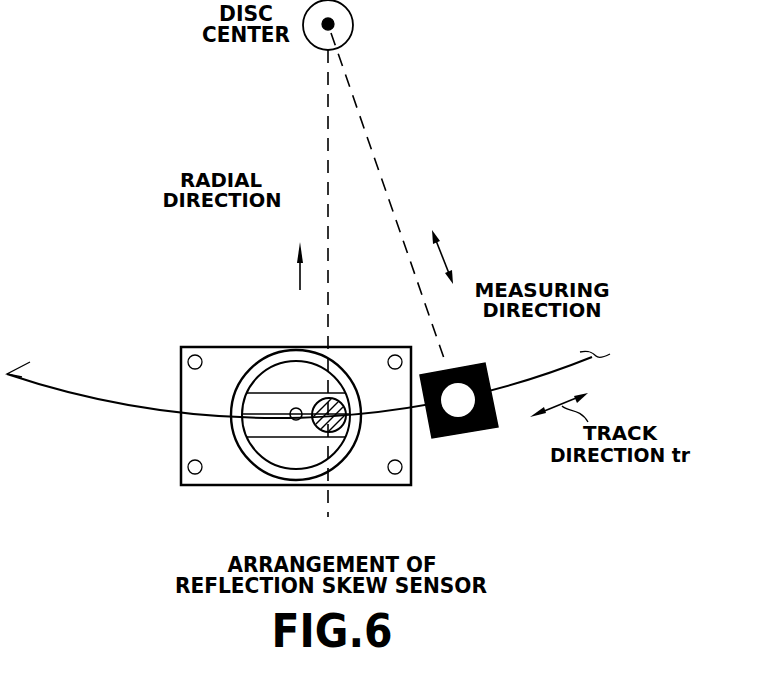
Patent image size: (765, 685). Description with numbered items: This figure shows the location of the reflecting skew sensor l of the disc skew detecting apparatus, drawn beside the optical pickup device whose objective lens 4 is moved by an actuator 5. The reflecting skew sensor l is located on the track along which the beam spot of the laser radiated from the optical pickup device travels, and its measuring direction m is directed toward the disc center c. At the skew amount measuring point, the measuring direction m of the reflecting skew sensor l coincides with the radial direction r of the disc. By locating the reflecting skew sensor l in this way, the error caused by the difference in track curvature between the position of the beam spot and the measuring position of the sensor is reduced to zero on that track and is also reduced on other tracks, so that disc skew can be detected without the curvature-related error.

The disc center c is at (334, 22).
The radial direction r is at (298, 266).
The measuring direction m is at (445, 258).
The objective lens 4 is at (340, 427).
The actuator 5 is at (284, 450).
The reflecting skew sensor l is at (498, 427).